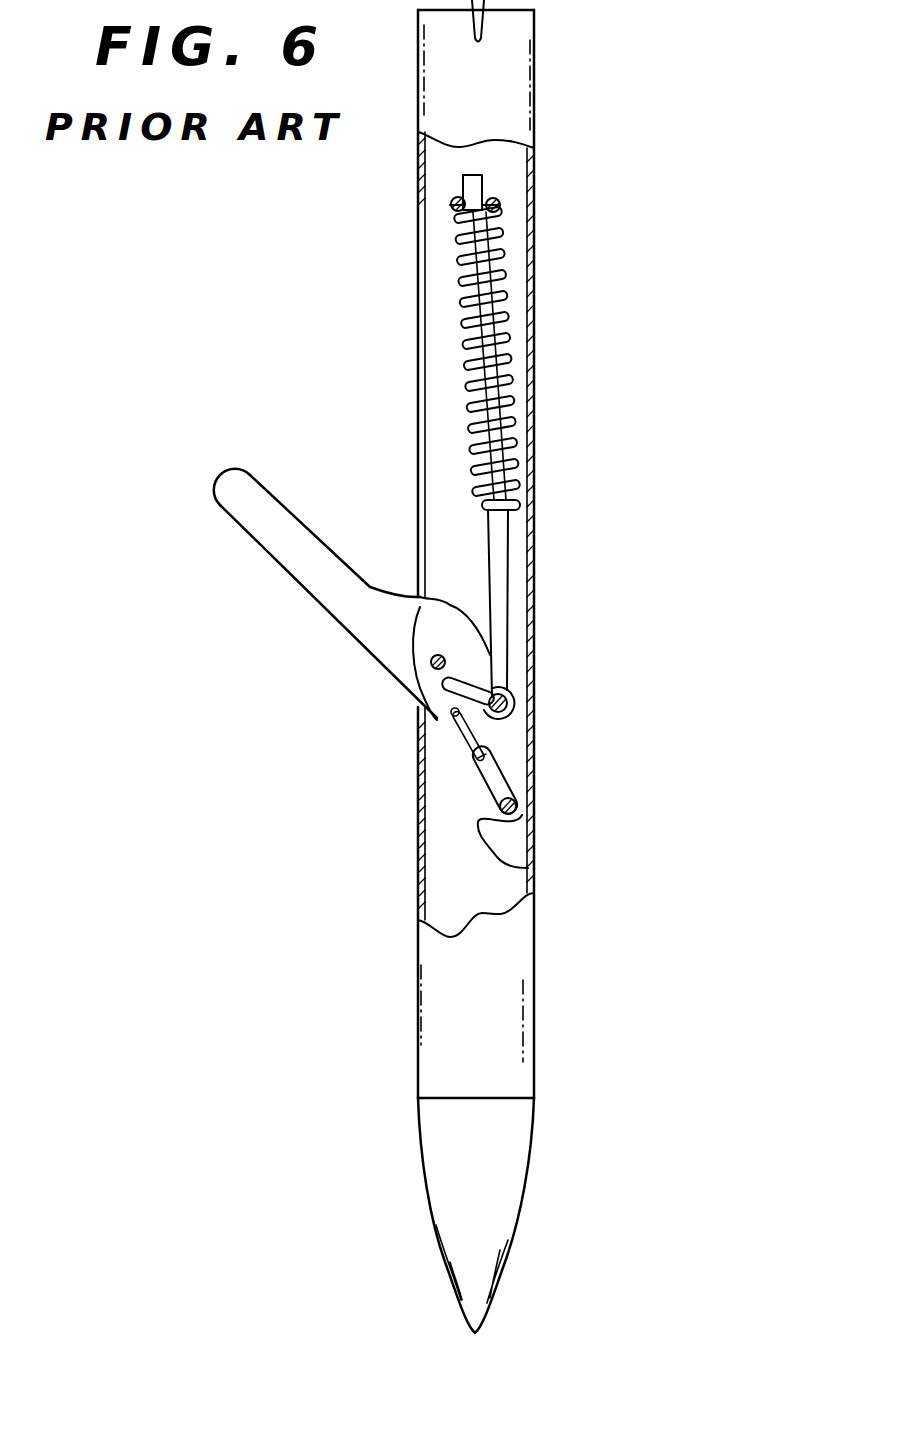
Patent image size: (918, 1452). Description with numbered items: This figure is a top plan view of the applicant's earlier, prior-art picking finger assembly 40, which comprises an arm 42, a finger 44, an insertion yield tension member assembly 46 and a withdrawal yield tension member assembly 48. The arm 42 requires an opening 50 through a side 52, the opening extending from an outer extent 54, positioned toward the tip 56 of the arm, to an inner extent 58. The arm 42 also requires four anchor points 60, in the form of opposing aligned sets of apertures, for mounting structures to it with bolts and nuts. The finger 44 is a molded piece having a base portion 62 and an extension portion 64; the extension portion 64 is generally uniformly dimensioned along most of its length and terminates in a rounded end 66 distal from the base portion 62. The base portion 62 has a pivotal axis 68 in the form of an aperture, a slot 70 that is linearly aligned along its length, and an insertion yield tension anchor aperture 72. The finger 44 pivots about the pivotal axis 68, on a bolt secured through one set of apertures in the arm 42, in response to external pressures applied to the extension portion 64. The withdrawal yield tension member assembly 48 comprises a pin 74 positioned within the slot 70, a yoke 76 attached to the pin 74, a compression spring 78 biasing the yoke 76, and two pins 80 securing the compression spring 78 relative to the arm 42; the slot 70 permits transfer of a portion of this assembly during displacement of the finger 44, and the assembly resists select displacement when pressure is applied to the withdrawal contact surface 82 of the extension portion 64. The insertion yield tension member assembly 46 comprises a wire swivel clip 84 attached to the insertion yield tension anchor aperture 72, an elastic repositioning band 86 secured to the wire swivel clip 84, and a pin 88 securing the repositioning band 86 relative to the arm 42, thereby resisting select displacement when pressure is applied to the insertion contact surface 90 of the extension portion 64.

The picking finger assembly 40 is at (636, 75).
The arm 42 is at (534, 358).
The finger 44 is at (332, 617).
The insertion yield tension member assembly 46 is at (378, 833).
The withdrawal yield tension member assembly 48 is at (514, 410).
The opening 50 is at (437, 348).
The side 52 is at (418, 1022).
The outer extent 54 is at (418, 882).
The tip 56 is at (428, 1190).
The inner extent 58 is at (420, 200).
The anchor points 60 is at (452, 212).
The base portion 62 is at (452, 625).
The extension portion 64 is at (258, 530).
The rounded end 66 is at (232, 472).
The pivotal axis 68 is at (441, 683).
The slot 70 is at (450, 714).
The insertion yield tension anchor aperture 72 is at (470, 760).
The pin 74 is at (508, 690).
The yoke 76 is at (511, 548).
The compression spring 78 is at (518, 447).
The pins 80 is at (455, 206).
The withdrawal contact surface 82 is at (280, 502).
The wire swivel clip 84 is at (492, 740).
The repositioning band 86 is at (528, 868).
The pin 88 is at (492, 790).
The insertion contact surface 90 is at (293, 578).